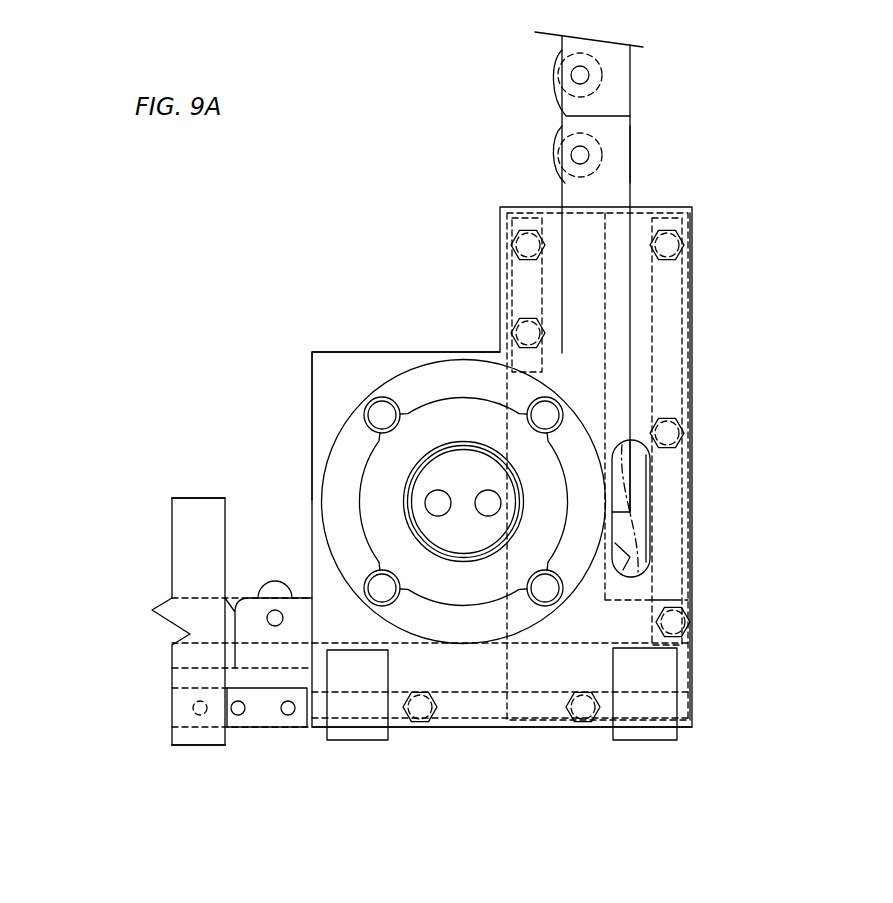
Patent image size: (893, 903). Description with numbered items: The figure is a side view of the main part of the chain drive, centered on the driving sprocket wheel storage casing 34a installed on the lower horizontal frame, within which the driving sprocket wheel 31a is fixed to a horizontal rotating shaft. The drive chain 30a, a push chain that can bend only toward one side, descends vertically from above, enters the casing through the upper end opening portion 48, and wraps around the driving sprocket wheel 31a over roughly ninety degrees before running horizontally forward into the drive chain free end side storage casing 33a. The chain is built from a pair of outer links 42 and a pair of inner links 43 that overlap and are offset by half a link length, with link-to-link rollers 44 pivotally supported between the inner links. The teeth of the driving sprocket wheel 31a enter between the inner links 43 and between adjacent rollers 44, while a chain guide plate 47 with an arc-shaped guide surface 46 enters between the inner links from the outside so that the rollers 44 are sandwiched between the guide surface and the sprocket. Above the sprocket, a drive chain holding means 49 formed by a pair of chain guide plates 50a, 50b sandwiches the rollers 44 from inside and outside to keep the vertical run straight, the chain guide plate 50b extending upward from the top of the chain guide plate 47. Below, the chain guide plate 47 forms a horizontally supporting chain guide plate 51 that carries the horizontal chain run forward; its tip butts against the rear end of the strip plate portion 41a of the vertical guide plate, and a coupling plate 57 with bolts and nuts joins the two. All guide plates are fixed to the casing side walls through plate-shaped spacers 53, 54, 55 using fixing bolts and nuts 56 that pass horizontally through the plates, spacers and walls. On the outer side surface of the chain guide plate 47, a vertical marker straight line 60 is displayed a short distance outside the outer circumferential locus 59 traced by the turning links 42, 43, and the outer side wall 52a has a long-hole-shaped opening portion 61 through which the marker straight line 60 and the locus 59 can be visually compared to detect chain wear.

The drive chain 30a is at (558, 105).
The link-to-link roller 44 is at (602, 73).
The outer link 42 is at (615, 98).
The upper end opening portion 48 is at (615, 162).
The drive chain holding means 49 is at (494, 222).
The plate-shaped spacer 53 is at (528, 203).
The chain guide plate 50a is at (530, 292).
The chain guide plate 50b is at (660, 296).
The plate-shaped spacer 54 is at (695, 392).
The fixing bolts and nuts 56 is at (528, 245).
The driving sprocket wheel storage casing 34a is at (380, 347).
The chain guide plate 47 is at (580, 648).
The driving sprocket wheel 31a is at (400, 478).
The guide surface 46 is at (500, 560).
The drive chain free end side storage casing 33a is at (205, 492).
The marker straight line 60 is at (650, 483).
The long-hole-shaped opening portion 61 is at (627, 440).
The outer circumferential locus 59 is at (657, 530).
The inner link 43 is at (613, 527).
The outer side wall 52a is at (640, 595).
The plate-shaped spacer 55 is at (530, 705).
The horizontally supporting chain guide plate 51 is at (272, 700).
The strip plate portion 41a is at (205, 678).
The coupling plate 57 is at (253, 720).